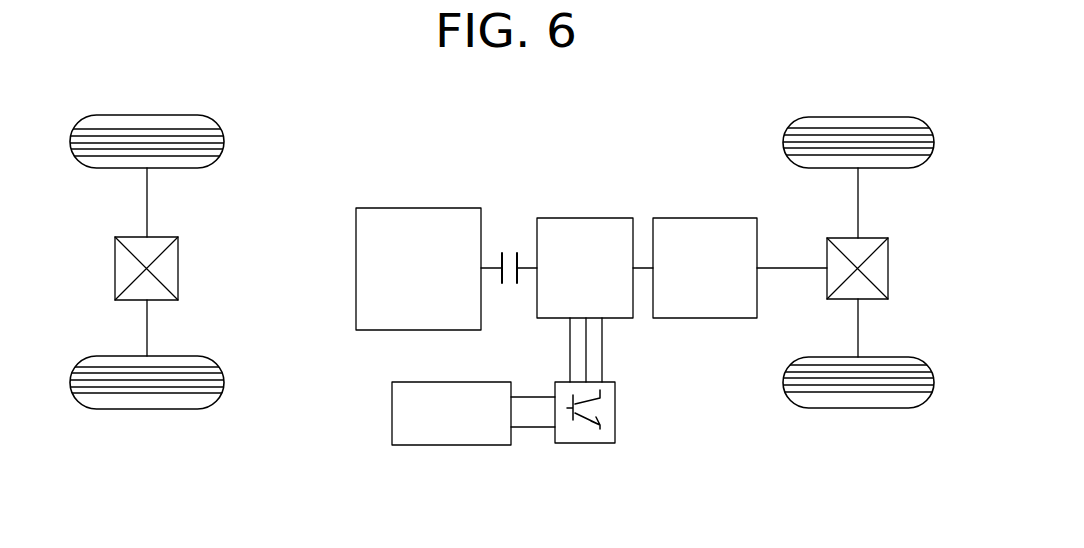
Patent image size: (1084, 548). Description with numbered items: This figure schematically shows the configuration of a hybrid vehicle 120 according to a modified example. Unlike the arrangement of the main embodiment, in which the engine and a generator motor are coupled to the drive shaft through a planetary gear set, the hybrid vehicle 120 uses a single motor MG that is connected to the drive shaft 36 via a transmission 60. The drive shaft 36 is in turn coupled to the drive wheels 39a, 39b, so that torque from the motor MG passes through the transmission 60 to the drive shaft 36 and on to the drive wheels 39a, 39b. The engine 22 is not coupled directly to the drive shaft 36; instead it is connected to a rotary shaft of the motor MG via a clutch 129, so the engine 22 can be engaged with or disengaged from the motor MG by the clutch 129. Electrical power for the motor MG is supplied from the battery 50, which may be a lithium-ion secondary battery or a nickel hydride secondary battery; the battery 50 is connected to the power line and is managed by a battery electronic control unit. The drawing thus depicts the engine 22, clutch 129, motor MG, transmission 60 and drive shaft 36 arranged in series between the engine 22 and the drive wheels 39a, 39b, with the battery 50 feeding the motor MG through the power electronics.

The hybrid vehicle 120 is at (719, 121).
The engine 22 is at (419, 207).
The clutch 129 is at (511, 252).
The motor MG is at (587, 217).
The transmission 60 is at (708, 217).
The drive shaft 36 is at (783, 260).
The battery 50 is at (467, 380).
The drive wheel 39a is at (858, 117).
The drive wheel 39b is at (857, 408).